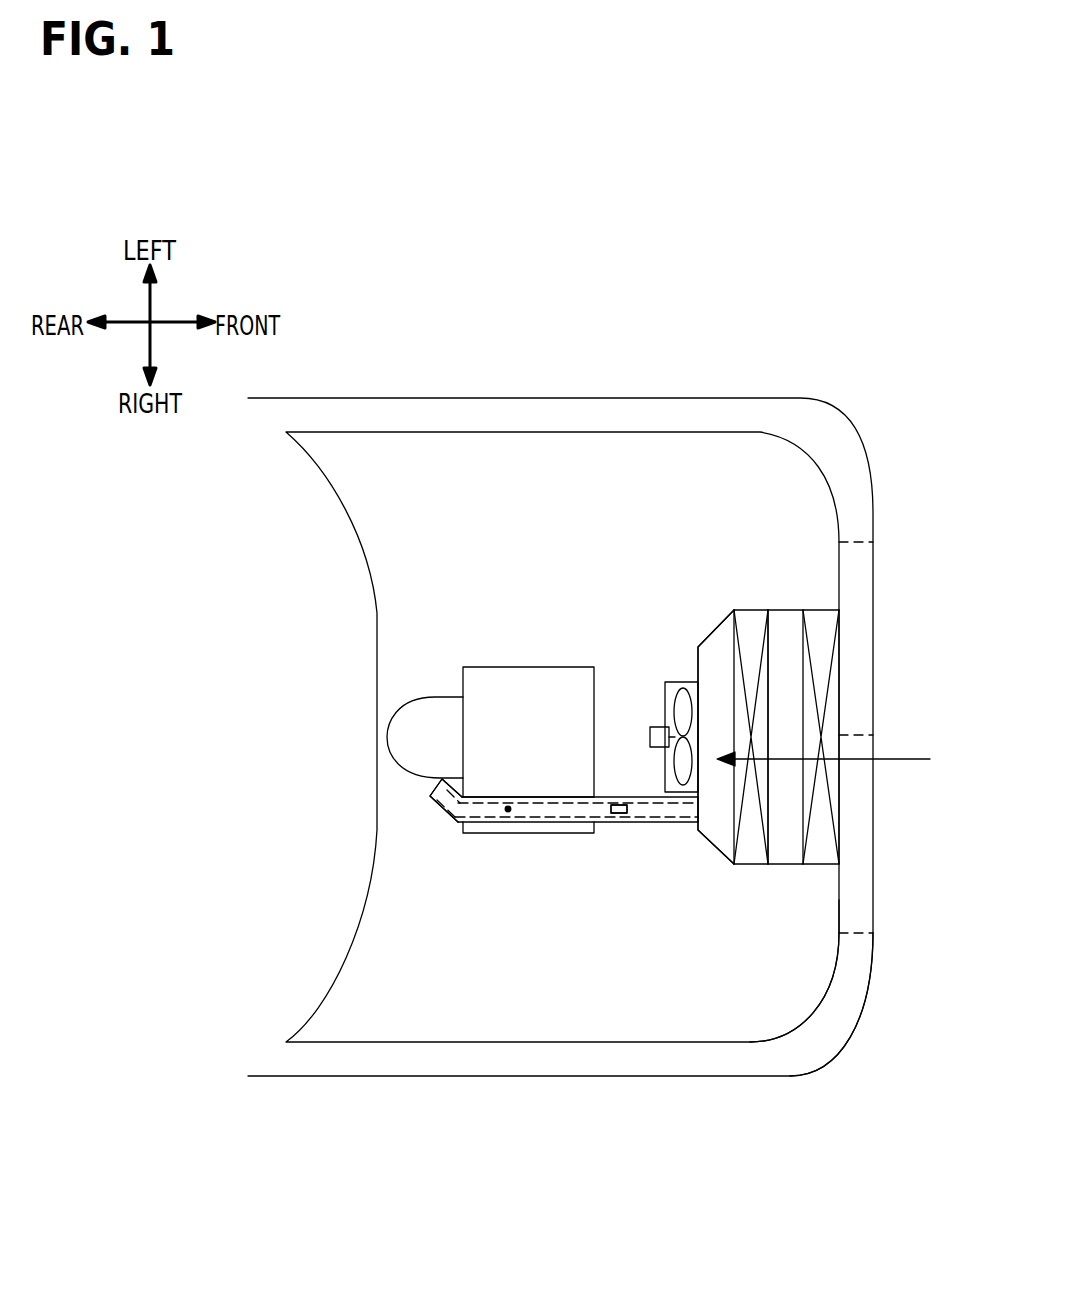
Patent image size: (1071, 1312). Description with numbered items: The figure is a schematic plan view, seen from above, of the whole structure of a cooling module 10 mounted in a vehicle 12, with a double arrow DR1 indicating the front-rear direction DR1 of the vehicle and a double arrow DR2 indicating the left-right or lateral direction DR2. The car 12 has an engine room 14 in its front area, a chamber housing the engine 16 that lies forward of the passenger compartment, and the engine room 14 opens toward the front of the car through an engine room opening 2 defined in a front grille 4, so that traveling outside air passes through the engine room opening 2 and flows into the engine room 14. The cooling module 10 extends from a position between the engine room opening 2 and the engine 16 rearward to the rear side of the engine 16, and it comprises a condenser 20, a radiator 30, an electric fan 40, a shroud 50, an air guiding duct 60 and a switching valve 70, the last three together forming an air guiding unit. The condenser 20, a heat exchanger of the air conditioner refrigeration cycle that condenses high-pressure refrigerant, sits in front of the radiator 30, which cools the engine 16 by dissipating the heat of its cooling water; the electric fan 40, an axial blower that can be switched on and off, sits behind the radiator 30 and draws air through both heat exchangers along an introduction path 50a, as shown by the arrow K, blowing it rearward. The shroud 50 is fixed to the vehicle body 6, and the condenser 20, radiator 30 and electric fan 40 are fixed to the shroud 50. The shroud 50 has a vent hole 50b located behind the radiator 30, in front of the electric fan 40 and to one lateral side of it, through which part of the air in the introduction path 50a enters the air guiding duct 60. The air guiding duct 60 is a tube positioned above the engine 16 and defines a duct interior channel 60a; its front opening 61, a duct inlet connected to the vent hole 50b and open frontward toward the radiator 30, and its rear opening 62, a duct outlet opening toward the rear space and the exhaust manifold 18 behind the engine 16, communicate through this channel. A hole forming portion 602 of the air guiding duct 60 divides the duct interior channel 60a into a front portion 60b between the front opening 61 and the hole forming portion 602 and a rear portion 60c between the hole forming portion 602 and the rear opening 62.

The engine room opening 2 is at (858, 567).
The front grille 4 is at (858, 950).
The vehicle body 6 is at (866, 982).
The cooling module 10 is at (809, 780).
The vehicle 12 is at (843, 279).
The engine room 14 is at (720, 475).
The engine 16 is at (525, 667).
The exhaust manifold 18 is at (420, 697).
The condenser 20 is at (823, 853).
The radiator 30 is at (770, 797).
The electric fan 40 is at (688, 682).
The shroud 50 is at (700, 743).
The introduction path 50a is at (718, 718).
The vent hole 50b is at (675, 823).
The air guiding duct 60 is at (513, 937).
The duct interior channel 60a is at (633, 823).
The front portion 60b is at (649, 812).
The rear portion 60c is at (508, 809).
The front opening 61 is at (677, 818).
The rear opening 62 is at (440, 780).
The switching valve 70 is at (619, 822).
The hole forming portion 602 is at (619, 805).
The arrow K is at (900, 759).
The front-rear direction DR1 is at (170, 320).
The left-right direction DR2 is at (153, 298).